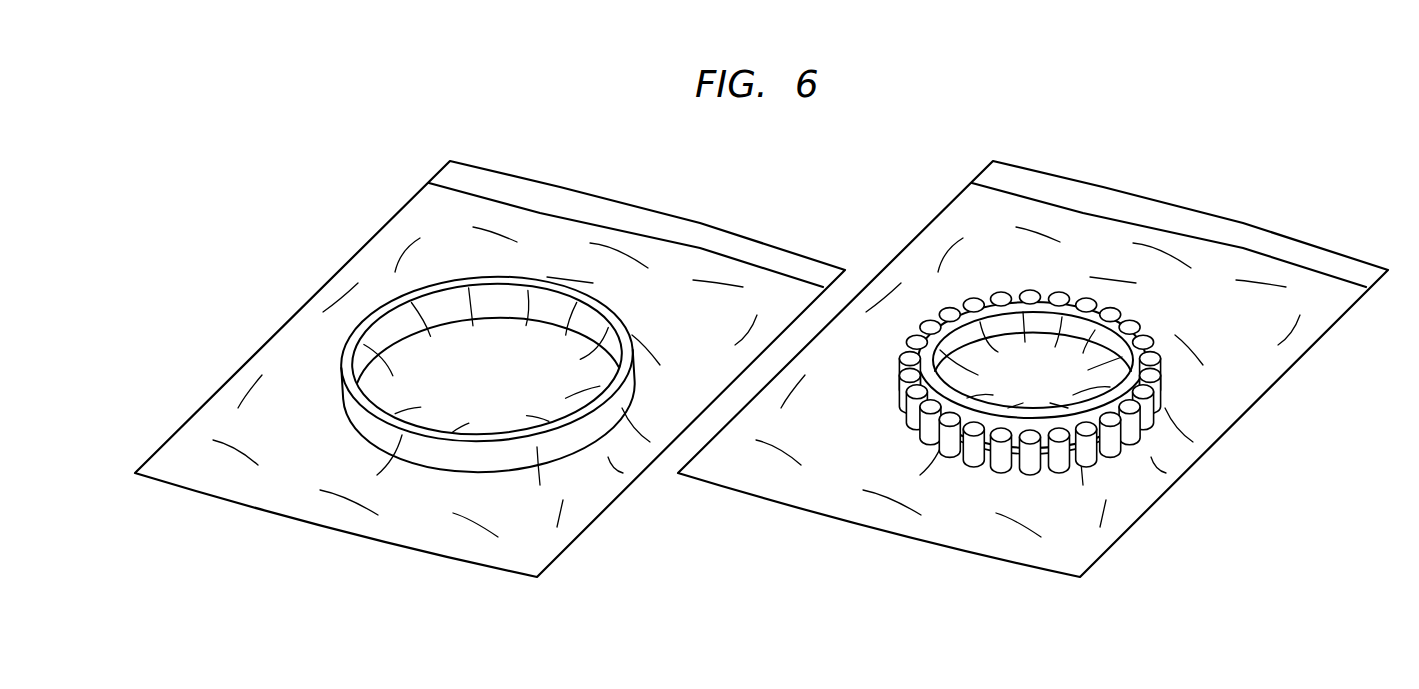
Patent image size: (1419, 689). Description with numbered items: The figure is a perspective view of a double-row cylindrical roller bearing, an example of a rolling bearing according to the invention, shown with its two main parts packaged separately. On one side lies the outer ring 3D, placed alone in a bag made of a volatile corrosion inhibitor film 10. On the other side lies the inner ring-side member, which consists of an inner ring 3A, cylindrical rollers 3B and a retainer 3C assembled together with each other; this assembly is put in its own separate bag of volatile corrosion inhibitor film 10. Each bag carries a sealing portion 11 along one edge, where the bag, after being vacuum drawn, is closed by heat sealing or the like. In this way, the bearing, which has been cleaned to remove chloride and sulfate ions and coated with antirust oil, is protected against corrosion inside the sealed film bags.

The volatile corrosion inhibitor film 10 is at (397, 237).
The sealing portion 11 is at (540, 213).
The outer ring 3D is at (438, 458).
The inner ring 3A is at (903, 392).
The cylindrical roller 3B is at (988, 443).
The retainer 3C is at (1107, 448).